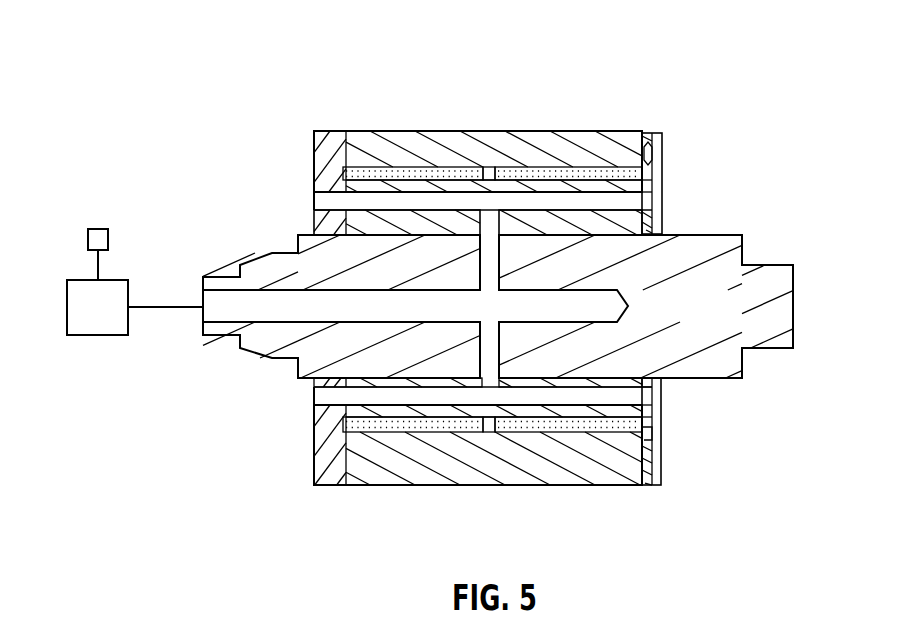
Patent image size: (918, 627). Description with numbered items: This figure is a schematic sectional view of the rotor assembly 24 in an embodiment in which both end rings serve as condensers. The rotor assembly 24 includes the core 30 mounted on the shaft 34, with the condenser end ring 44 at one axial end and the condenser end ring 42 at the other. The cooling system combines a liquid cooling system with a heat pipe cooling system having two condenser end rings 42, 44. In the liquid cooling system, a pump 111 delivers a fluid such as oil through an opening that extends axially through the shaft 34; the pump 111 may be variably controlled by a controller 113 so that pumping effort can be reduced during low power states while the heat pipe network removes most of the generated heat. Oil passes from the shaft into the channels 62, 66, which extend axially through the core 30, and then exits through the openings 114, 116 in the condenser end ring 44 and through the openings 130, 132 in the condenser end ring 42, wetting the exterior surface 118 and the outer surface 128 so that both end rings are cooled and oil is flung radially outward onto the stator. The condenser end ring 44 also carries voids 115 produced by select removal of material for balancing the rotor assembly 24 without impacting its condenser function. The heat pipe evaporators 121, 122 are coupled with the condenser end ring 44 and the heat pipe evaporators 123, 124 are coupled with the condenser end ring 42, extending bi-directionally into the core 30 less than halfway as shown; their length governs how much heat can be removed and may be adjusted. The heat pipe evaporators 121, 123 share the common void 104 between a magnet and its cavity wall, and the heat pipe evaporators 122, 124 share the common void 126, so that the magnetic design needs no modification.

The rotor assembly 24 is at (697, 82).
The core 30 is at (365, 482).
The shaft 34 is at (732, 233).
The end ring 42 is at (663, 458).
The condenser end ring 44 is at (313, 173).
The channel 62 is at (593, 203).
The channel 66 is at (633, 400).
The void 104 is at (495, 175).
The pump 111 is at (118, 322).
The controller 113 is at (87, 240).
The opening 114 is at (315, 207).
The void 115 is at (663, 150).
The opening 116 is at (318, 403).
The exterior surface 118 is at (313, 417).
The heat pipe evaporator 121 is at (400, 175).
The heat pipe evaporator 122 is at (418, 427).
The heat pipe evaporator 123 is at (537, 173).
The heat pipe evaporator 124 is at (573, 425).
The void 126 is at (490, 428).
The outer surface 128 is at (655, 428).
The opening 130 is at (652, 208).
The opening 132 is at (658, 400).